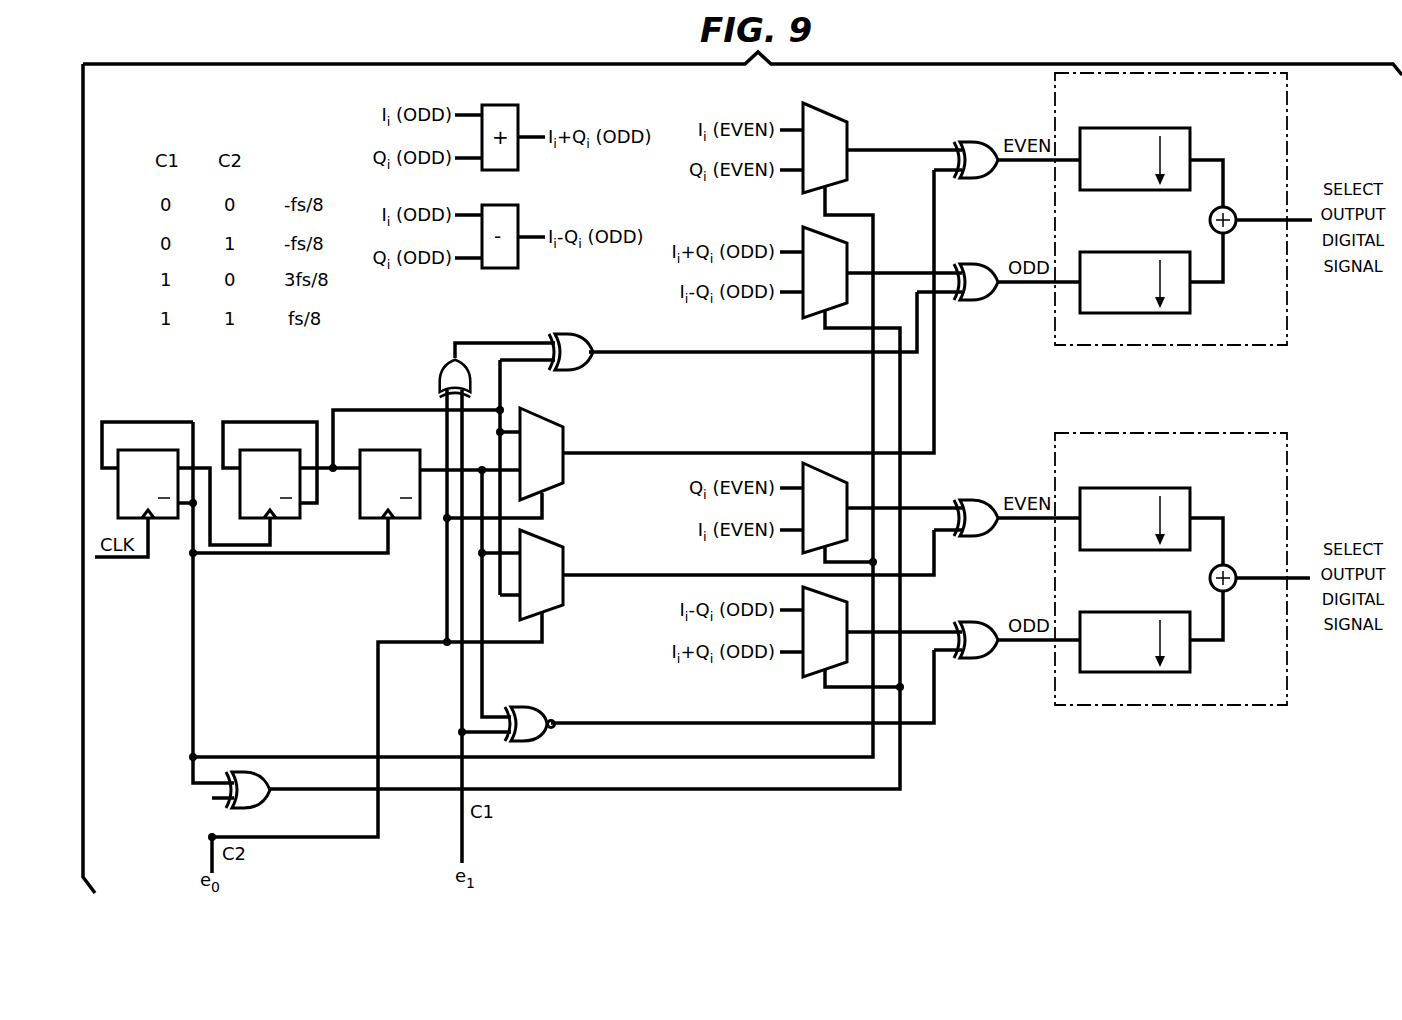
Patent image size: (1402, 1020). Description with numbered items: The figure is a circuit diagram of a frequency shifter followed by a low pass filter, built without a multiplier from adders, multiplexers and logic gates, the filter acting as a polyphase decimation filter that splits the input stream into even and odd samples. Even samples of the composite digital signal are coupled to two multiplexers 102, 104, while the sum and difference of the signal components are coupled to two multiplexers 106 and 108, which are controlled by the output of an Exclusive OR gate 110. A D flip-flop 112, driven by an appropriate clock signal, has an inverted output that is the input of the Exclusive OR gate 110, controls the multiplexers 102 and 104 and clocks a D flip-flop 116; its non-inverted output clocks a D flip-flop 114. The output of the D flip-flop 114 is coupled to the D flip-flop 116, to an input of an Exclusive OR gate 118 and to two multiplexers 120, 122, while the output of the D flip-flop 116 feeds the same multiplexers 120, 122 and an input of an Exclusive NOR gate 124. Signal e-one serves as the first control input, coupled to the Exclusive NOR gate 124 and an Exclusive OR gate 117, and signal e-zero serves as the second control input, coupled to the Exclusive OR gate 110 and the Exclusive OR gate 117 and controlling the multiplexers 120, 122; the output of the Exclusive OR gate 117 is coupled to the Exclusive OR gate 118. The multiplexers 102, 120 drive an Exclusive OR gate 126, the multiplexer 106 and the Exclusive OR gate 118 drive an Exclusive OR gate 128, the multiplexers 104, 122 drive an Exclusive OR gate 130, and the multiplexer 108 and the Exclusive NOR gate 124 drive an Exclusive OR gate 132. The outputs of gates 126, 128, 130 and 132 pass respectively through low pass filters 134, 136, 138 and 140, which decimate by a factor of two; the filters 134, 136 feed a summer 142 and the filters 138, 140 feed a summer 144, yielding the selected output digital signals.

The multiplexer 102 is at (830, 110).
The multiplexer 104 is at (835, 470).
The multiplexer 106 is at (830, 238).
The multiplexer 108 is at (803, 667).
The Exclusive OR gate 110 is at (264, 800).
The D flip-flop 112 is at (146, 450).
The D flip-flop 114 is at (268, 450).
The D flip-flop 116 is at (384, 450).
The Exclusive OR gate 117 is at (447, 356).
The Exclusive OR gate 118 is at (578, 336).
The multiplexer 120 is at (545, 412).
The multiplexer 122 is at (545, 533).
The Exclusive NOR gate 124 is at (530, 708).
The Exclusive OR gate 126 is at (976, 142).
The Exclusive OR gate 128 is at (976, 264).
The Exclusive OR gate 130 is at (976, 500).
The Exclusive OR gate 132 is at (976, 622).
The low pass filter 134 is at (1120, 128).
The low pass filter 136 is at (1120, 252).
The low pass filter 138 is at (1120, 488).
The low pass filter 140 is at (1120, 612).
The summer 142 is at (1233, 208).
The summer 144 is at (1233, 566).